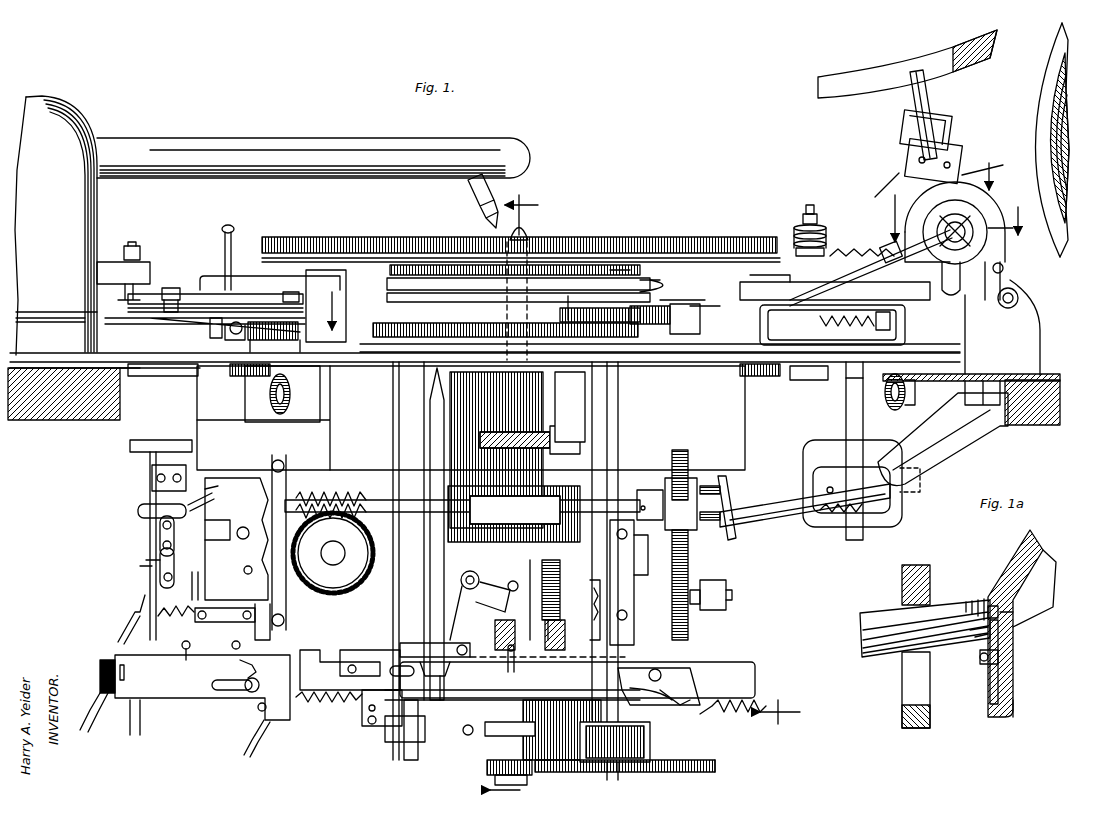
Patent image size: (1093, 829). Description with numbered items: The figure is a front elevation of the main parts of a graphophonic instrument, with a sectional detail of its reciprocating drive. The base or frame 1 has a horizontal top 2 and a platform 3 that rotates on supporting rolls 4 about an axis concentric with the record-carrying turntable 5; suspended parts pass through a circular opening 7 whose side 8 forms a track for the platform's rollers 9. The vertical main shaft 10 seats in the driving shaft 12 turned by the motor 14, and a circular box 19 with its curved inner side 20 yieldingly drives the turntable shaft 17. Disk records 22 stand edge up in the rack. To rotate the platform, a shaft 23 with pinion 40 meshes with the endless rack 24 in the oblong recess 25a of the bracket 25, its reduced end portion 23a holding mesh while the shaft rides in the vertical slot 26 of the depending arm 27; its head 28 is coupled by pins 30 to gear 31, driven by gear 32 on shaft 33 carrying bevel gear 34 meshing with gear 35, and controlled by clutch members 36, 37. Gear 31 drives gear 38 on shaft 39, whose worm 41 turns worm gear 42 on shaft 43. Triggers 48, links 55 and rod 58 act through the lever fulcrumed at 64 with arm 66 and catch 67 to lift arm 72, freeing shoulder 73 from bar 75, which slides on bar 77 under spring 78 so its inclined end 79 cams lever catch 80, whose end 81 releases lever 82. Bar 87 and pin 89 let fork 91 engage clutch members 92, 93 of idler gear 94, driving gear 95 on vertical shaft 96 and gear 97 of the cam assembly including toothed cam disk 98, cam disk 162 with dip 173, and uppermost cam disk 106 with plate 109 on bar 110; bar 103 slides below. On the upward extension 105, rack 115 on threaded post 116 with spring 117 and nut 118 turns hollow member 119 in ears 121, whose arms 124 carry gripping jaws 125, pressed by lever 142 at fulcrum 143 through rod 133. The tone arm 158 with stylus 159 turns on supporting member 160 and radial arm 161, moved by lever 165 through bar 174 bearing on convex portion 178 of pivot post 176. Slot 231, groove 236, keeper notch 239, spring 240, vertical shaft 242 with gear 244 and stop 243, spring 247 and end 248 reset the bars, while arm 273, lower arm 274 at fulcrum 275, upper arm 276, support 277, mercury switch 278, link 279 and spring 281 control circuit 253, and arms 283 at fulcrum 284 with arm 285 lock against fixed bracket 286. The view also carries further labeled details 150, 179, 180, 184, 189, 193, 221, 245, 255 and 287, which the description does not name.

In FIG. 1, the base or frame 1 is at (100, 420).
In FIG. 1, the horizontal top 2 is at (523, 277).
In FIG. 1, the platform 3 is at (918, 338).
In FIG. 1, the supporting rolls 4 is at (270, 400).
In FIG. 1, the record-carrying turntable 5 is at (332, 238).
In FIG. 1, the circular opening 7 is at (148, 370).
In FIG. 1, the side of opening 8 is at (809, 384).
In FIG. 1, the rollers 9 is at (175, 378).
In FIG. 1, the vertical main shaft 10 is at (495, 780).
In FIG. 1, the driving shaft 12 is at (954, 225).
In FIG. 1, the electrical motor 14 is at (939, 190).
In FIG. 1, the turntable shaft 17 is at (515, 402).
In FIG. 1, the circular box 19 is at (326, 306).
In FIG. 1, the curved inner side of box 20 is at (462, 514).
In FIG. 1, the disk records 22 is at (1040, 122).
In FIG. 1, the shaft 23 is at (780, 520).
In FIG. 1A, the shaft 23 is at (878, 618).
In FIG. 1A, the reduced end portion 23a is at (1012, 624).
In FIG. 1, the endless rack 24 is at (830, 520).
In FIG. 1A, the endless rack 24 is at (986, 672).
In FIG. 1, the bracket 25 is at (861, 483).
In FIG. 1A, the bracket 25 is at (1010, 560).
In FIG. 1A, the oblong recess 25a is at (1016, 680).
In FIG. 1, the vertical slot 26 is at (850, 540).
In FIG. 1A, the vertical slot 26 is at (902, 696).
In FIG. 1, the downwardly extending arm 27 is at (846, 388).
In FIG. 1A, the downwardly extending arm 27 is at (930, 570).
In FIG. 1, the head 28 is at (724, 478).
In FIG. 1, the pins 30 is at (722, 488).
In FIG. 1, the gear 31 is at (684, 462).
In FIG. 1, the gear 32 is at (690, 572).
In FIG. 1, the shaft 33 is at (732, 595).
In FIG. 1, the bevel gear 34 is at (548, 562).
In FIG. 1, the gear 35 is at (530, 635).
In FIG. 1, the clutch member 36 is at (594, 616).
In FIG. 1, the clutch member 37 is at (582, 597).
In FIG. 1, the gear 38 is at (651, 504).
In FIG. 1, the shaft 39 is at (418, 500).
In FIG. 1, the pinion 40 is at (870, 478).
In FIG. 1A, the pinion 40 is at (978, 600).
In FIG. 1, the worm 41 is at (330, 492).
In FIG. 1, the worm gear 42 is at (333, 553).
In FIG. 1, the shaft 43 is at (333, 565).
In FIG. 1, the triggers 48 is at (262, 587).
In FIG. 1, the links 55 is at (230, 576).
In FIG. 1, the horizontal rod 58 is at (175, 650).
In FIG. 1, the lever fulcrum 64 is at (212, 685).
In FIG. 1, the lever arm 66 is at (185, 706).
In FIG. 1, the double-sided catch 67 is at (240, 664).
In FIG. 1, the lever arm 72 is at (435, 650).
In FIG. 1, the shoulder 73 is at (300, 660).
In FIG. 1, the horizontal bar 75 is at (452, 687).
In FIG. 1, the slidable horizontal bar 77 is at (570, 681).
In FIG. 1, the spring 78 is at (350, 705).
In FIG. 1, the inclined right hand end 79 is at (670, 702).
In FIG. 1, the lever catch 80 is at (659, 686).
In FIG. 1, the end of lever catch 81 is at (640, 700).
In FIG. 1, the lever 82 is at (612, 562).
In FIG. 1, the horizontal bar 87 is at (547, 657).
In FIG. 1, the pin 89 is at (508, 668).
In FIG. 1, the fork 91 is at (567, 731).
In FIG. 1, the clutch member 92 is at (456, 736).
In FIG. 1, the clutch member 93 is at (540, 773).
In FIG. 1, the idler gear 94 is at (487, 764).
In FIG. 1, the gear 95 is at (715, 766).
In FIG. 1, the vertical shaft 96 is at (608, 455).
In FIG. 1, the gear 97 is at (612, 326).
In FIG. 1, the toothed cam disk 98 is at (580, 330).
In FIG. 1, the flat wide bar 103 is at (830, 327).
In FIG. 1, the upward extension of platform 105 is at (835, 288).
In FIG. 1, the uppermost cam disk 106 is at (392, 283).
In FIG. 1, the plate 109 is at (645, 278).
In FIG. 1, the wide flat bar 110 is at (612, 268).
In FIG. 1, the toothed rack 115 is at (871, 268).
In FIG. 1, the threaded post 116 is at (812, 204).
In FIG. 1, the spring 117 is at (794, 232).
In FIG. 1, the nut 118 is at (818, 222).
In FIG. 1, the hollow member 119 is at (985, 206).
In FIG. 1, the ears 121 is at (975, 240).
In FIG. 1, the spaced arms 124 is at (948, 132).
In FIG. 1, the record-gripping jaws 125 is at (930, 102).
In FIG. 1, the rod 133 is at (972, 222).
In FIG. 1, the lever 142 is at (666, 283).
In FIG. 1, the fulcrum 143 is at (813, 325).
In FIG. 1, the screw 150 is at (1010, 270).
In FIG. 1, the tone arm 158 is at (345, 134).
In FIG. 1, the stylus 159 is at (488, 216).
In FIG. 1, the supporting member 160 is at (56, 225).
In FIG. 1, the radial arm 161 is at (130, 242).
In FIG. 1, the cam disk 162 is at (641, 313).
In FIG. 1, the lever 165 is at (296, 290).
In FIG. 1, the dip 173 is at (568, 296).
In FIG. 1, the bar 174 is at (215, 296).
In FIG. 1, the pivot post 176 is at (205, 329).
In FIG. 1, the convex portion 178 is at (97, 272).
In FIG. 1, the pin 179 is at (224, 238).
In FIG. 1, the frame 180 is at (240, 276).
In FIG. 1, the latch 184 is at (236, 335).
In FIG. 1, the block 189 is at (170, 288).
In FIG. 1, the rail 193 is at (97, 325).
In FIG. 1, the bar 221 is at (600, 312).
In FIG. 1, the slot 231 is at (505, 590).
In FIG. 1, the groove 236 is at (416, 531).
In FIG. 1, the keeper notch 239 is at (436, 676).
In FIG. 1, the spring 240 is at (411, 730).
In FIG. 1, the vertical shaft 242 is at (424, 534).
In FIG. 1, the adjustable stop 243 is at (360, 657).
In FIG. 1, the gear 244 is at (372, 353).
In FIG. 1, the pin 245 is at (412, 676).
In FIG. 1, the spring 247 is at (733, 716).
In FIG. 1, the left hand end of arm 248 is at (240, 650).
In FIG. 1, the electric circuit 253 is at (210, 493).
In FIG. 1, the bracket 255 is at (236, 539).
In FIG. 1, the lever arm 273 is at (198, 576).
In FIG. 1, the lower arm 274 is at (160, 594).
In FIG. 1, the fulcrum 275 is at (146, 560).
In FIG. 1, the upper arm 276 is at (162, 556).
In FIG. 1, the pivotally mounted support 277 is at (160, 532).
In FIG. 1, the mercury switch 278 is at (138, 511).
In FIG. 1, the horizontal link 279 is at (232, 622).
In FIG. 1, the spring 281 is at (209, 485).
In FIG. 1, the arms 283 is at (843, 328).
In FIG. 1, the fulcrum 284 is at (684, 301).
In FIG. 1, the arm 285 is at (146, 453).
In FIG. 1, the fixed bracket 286 is at (152, 476).
In FIG. 1, the block 287 is at (691, 324).